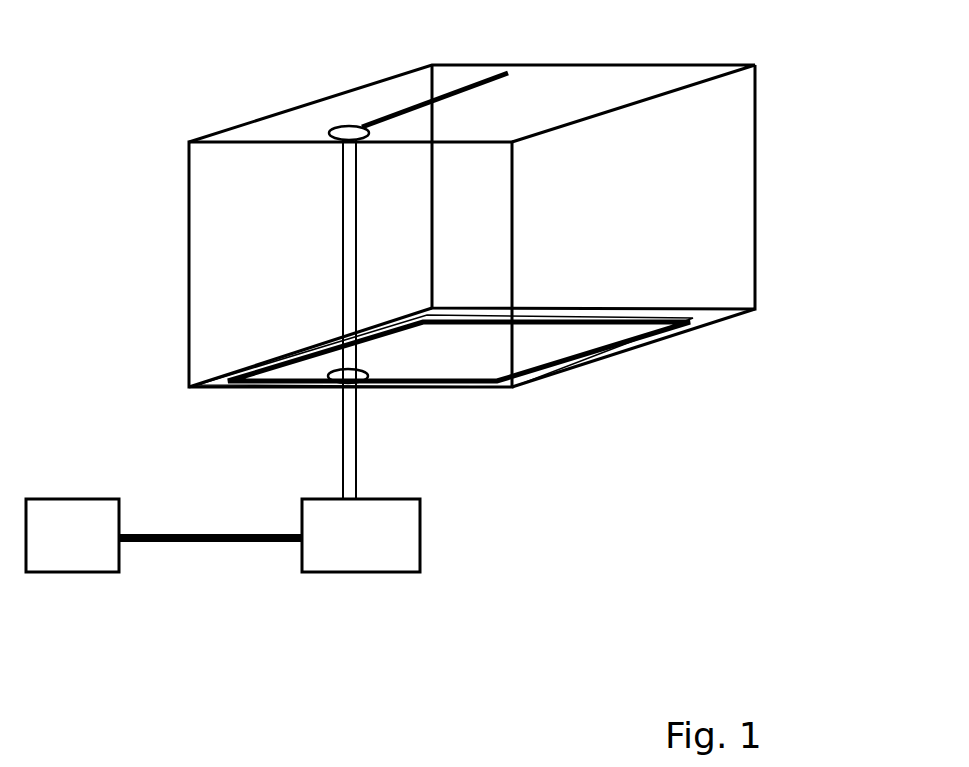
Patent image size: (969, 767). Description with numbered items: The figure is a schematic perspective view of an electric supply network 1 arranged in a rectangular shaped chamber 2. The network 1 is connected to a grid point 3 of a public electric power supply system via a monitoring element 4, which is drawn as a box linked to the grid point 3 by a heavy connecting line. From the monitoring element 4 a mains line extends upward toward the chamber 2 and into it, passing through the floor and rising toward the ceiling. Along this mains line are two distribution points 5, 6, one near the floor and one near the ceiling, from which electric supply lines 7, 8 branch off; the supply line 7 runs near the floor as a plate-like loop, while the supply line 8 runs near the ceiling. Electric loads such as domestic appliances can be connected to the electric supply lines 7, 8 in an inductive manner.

The electric supply network 1 is at (451, 294).
The chamber 2 is at (570, 83).
The grid point 3 is at (63, 545).
The monitoring element 4 is at (351, 545).
The distribution point 5 is at (330, 385).
The distribution point 6 is at (335, 130).
The electric supply line 7 is at (608, 347).
The electric supply line 8 is at (418, 103).